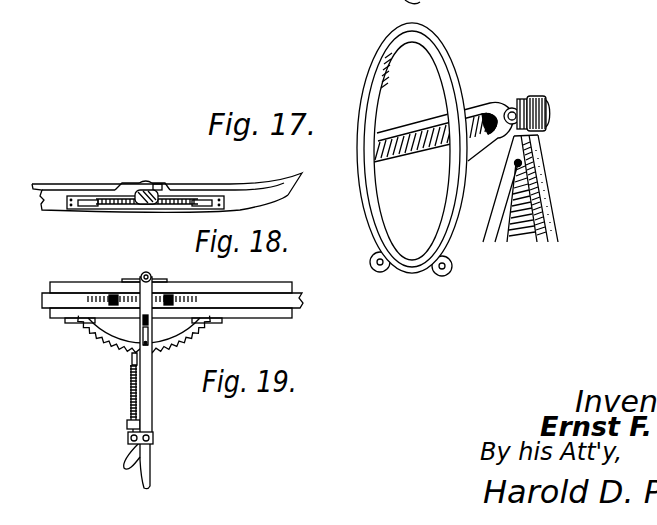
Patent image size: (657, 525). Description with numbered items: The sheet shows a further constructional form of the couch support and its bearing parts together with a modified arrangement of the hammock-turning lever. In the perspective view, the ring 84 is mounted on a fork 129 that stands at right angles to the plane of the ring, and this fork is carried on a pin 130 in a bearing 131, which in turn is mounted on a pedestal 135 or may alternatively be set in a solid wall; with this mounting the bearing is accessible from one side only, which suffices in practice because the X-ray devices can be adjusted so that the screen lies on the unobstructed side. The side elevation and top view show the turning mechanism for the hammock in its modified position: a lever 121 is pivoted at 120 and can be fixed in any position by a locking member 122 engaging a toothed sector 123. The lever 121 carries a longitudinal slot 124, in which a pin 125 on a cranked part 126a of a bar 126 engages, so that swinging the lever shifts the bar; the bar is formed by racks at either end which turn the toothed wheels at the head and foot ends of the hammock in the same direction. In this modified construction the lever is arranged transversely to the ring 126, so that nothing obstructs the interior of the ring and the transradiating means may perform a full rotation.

In FIG. 19, the ring 84 is at (435, 149).
In FIG. 18, the pivot point of lever 120 is at (143, 275).
In FIG. 17, the lever 121 is at (147, 197).
In FIG. 18, the lever 121 is at (152, 424).
In FIG. 18, the locking member 122 is at (131, 360).
In FIG. 17, the toothed sector 123 is at (123, 203).
In FIG. 18, the toothed sector 123 is at (113, 347).
In FIG. 18, the longitudinal slot 124 is at (148, 355).
In FIG. 18, the pin 125 is at (149, 331).
In FIG. 17, the bar 126 is at (258, 187).
In FIG. 18, the bar 126 is at (247, 300).
In FIG. 18, the cranked part of bar 126a is at (140, 313).
In FIG. 19, the fork 129 is at (498, 183).
In FIG. 19, the pin 130 is at (549, 113).
In FIG. 19, the bearing 131 is at (536, 96).
In FIG. 19, the pedestal 135 is at (552, 208).